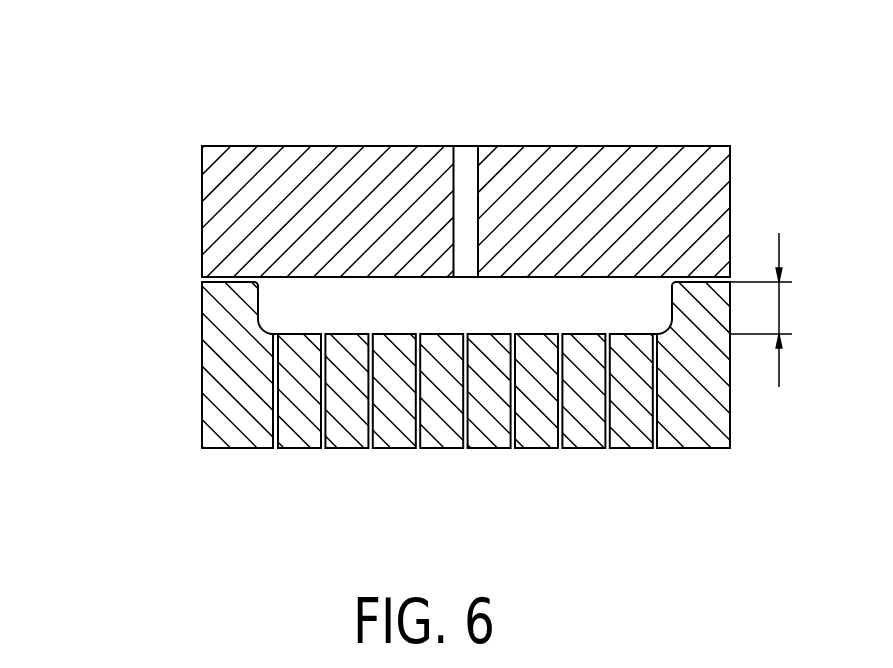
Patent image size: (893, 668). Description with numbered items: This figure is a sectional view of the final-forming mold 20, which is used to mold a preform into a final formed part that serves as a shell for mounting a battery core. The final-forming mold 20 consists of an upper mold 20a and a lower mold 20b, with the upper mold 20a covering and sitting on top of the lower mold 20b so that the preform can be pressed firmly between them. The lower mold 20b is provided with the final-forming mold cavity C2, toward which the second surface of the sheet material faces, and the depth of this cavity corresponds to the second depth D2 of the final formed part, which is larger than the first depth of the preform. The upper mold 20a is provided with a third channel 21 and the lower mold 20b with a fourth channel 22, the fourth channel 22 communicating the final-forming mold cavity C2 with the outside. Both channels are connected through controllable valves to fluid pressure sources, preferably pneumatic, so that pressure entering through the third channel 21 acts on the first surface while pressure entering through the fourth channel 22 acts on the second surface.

The final-forming mold 20 is at (118, 249).
The upper mold 20a is at (459, 157).
The lower mold 20b is at (455, 422).
The third channel 21 is at (462, 158).
The fourth channel 22 is at (560, 435).
The final-forming mold cavity C2 is at (363, 315).
The second depth D2 is at (763, 290).